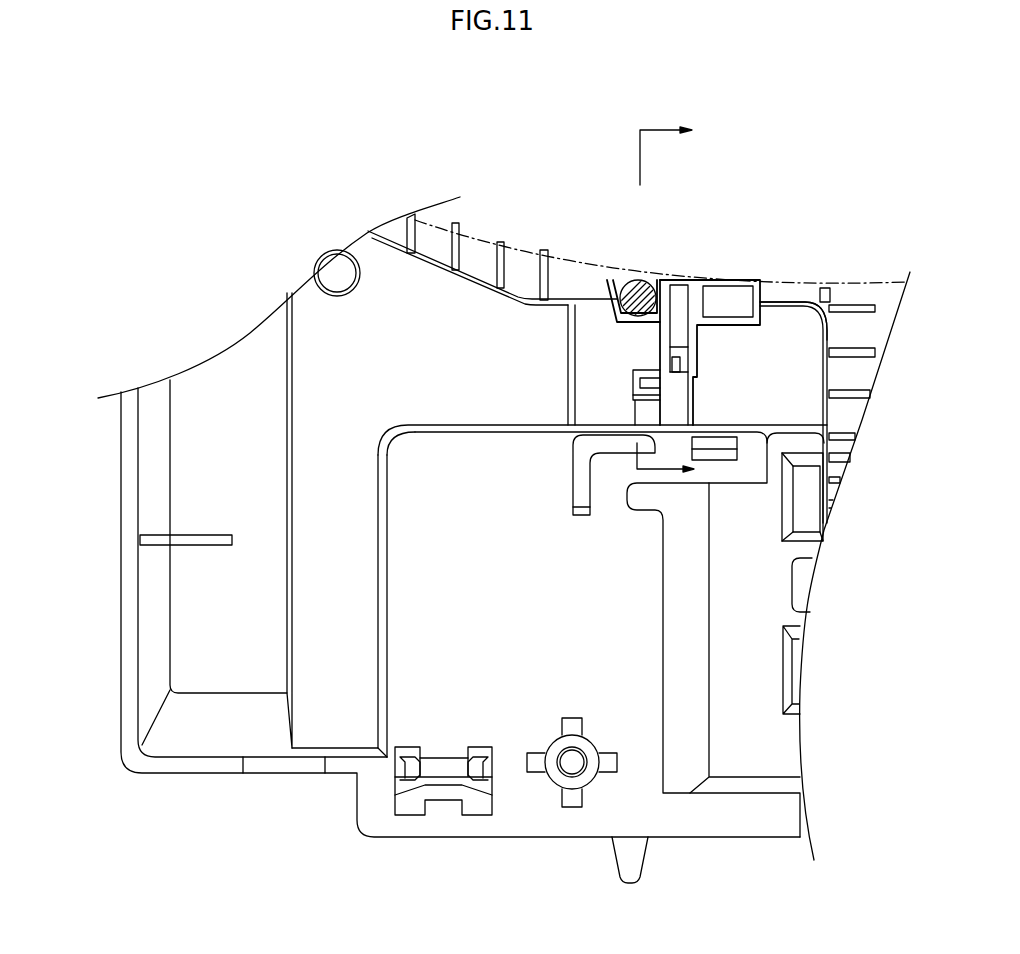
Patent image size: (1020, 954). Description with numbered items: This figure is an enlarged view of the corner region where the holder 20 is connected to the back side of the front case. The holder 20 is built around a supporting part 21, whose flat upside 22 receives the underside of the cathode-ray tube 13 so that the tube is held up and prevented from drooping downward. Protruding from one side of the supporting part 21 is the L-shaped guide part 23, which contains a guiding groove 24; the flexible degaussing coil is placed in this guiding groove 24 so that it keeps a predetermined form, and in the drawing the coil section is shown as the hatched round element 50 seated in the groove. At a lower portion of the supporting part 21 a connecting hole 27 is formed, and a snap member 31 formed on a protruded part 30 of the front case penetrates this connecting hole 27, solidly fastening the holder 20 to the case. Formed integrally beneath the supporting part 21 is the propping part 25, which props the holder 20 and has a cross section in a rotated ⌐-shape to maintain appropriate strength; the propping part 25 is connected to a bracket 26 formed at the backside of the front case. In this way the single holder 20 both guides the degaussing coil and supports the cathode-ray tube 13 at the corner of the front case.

The cathode-ray tube 13 is at (480, 250).
The holder 20 is at (719, 266).
The supporting part 21 is at (762, 294).
The flat upside 22 is at (747, 280).
The guide part 23 is at (612, 280).
The guiding groove 24 is at (659, 281).
The propping part 25 is at (636, 380).
The bracket 26 is at (642, 407).
The connecting hole 27 is at (683, 361).
The protruded part 30 is at (315, 413).
The snap member 31 is at (682, 374).
The seal ring 50 is at (641, 281).